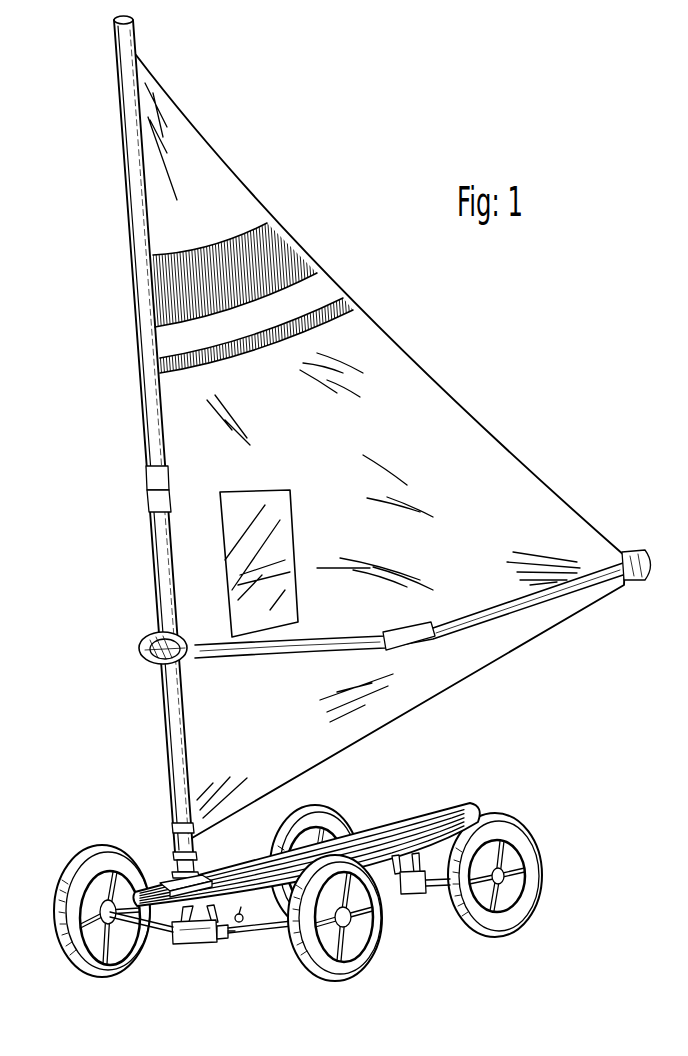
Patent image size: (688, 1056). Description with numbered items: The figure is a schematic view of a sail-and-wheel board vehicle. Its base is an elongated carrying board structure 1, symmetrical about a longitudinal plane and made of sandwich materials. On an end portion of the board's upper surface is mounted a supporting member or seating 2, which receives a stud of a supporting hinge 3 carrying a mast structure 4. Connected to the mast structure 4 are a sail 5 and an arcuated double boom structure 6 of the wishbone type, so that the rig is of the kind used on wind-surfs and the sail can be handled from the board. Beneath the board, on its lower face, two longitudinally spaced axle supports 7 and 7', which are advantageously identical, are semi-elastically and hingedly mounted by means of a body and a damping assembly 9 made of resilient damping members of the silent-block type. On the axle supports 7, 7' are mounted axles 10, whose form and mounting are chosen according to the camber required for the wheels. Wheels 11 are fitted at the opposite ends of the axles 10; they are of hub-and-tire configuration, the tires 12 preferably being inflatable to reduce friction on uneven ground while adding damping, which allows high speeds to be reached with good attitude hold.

The carrying board structure 1 is at (472, 803).
The supporting member or seating 2 is at (198, 878).
The supporting hinge 3 is at (175, 862).
The mast structure 4 is at (150, 350).
The sail 5 is at (410, 365).
The arcuated double boom structure 6 is at (543, 603).
The axle support 7 is at (197, 961).
The axle support 7' is at (409, 908).
The damping assembly 9 is at (243, 912).
The axle 10 is at (260, 933).
The wheel 11 is at (74, 974).
The tire 12 is at (311, 968).